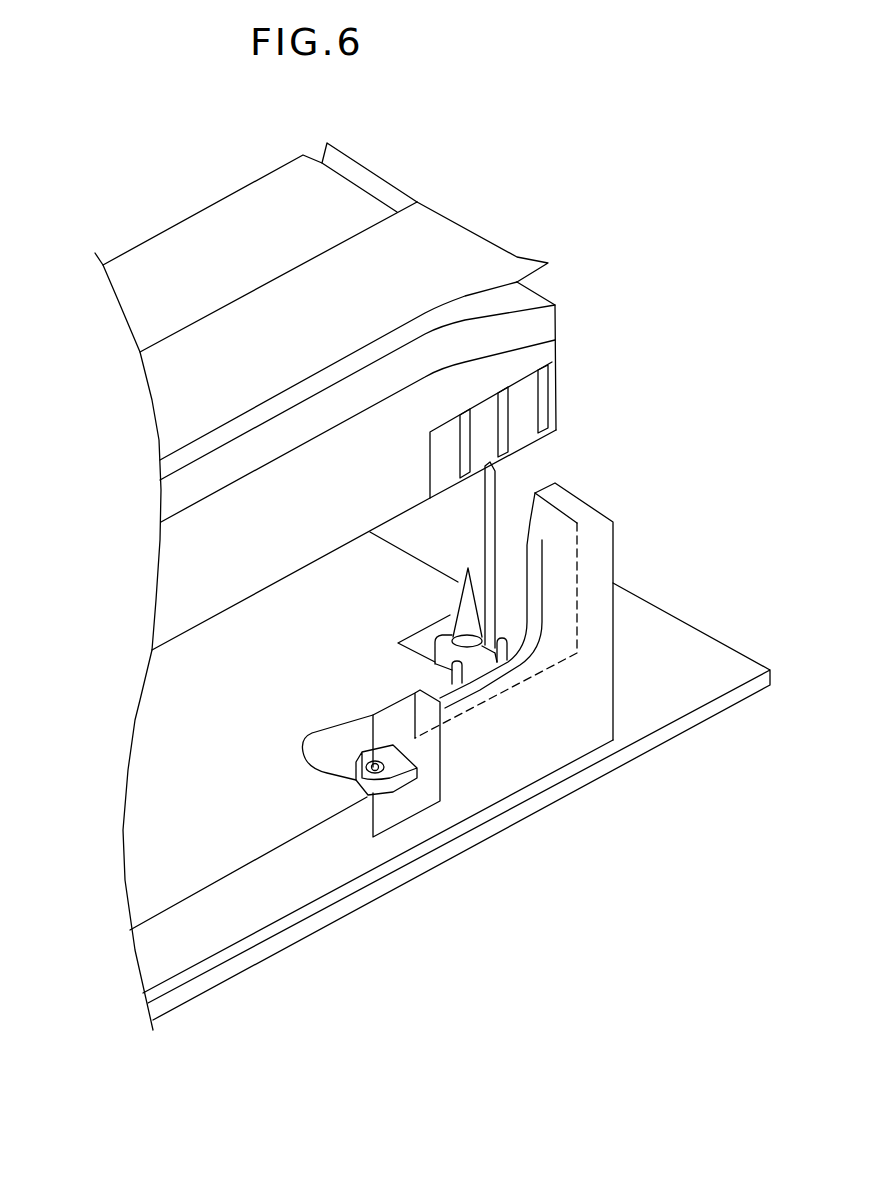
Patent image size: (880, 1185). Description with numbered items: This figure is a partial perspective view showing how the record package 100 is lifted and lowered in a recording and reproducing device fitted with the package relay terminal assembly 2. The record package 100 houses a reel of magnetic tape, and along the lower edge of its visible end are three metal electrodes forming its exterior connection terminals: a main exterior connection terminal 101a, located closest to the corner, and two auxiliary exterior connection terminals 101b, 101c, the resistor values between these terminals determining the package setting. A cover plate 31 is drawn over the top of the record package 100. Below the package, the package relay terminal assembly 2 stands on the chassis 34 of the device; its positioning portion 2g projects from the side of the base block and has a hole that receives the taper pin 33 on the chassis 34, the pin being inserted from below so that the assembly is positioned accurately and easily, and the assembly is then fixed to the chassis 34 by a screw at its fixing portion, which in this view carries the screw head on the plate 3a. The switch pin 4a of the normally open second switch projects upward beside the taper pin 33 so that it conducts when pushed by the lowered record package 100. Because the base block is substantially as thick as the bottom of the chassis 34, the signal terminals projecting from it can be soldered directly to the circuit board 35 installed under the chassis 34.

The cover plate 31 is at (460, 235).
The record package 100 is at (530, 303).
The main exterior connection terminal 101a is at (523, 418).
The auxiliary exterior connection terminal 101b is at (492, 412).
The auxiliary exterior connection terminal 101c is at (445, 427).
The taper pin 33 is at (457, 612).
The package relay terminal assembly 2 is at (597, 520).
The positioning portion 2g is at (490, 640).
The mounting plate 3a is at (522, 658).
The switch pin 4a is at (475, 668).
The chassis 34 is at (285, 898).
The circuit board 35 is at (727, 672).